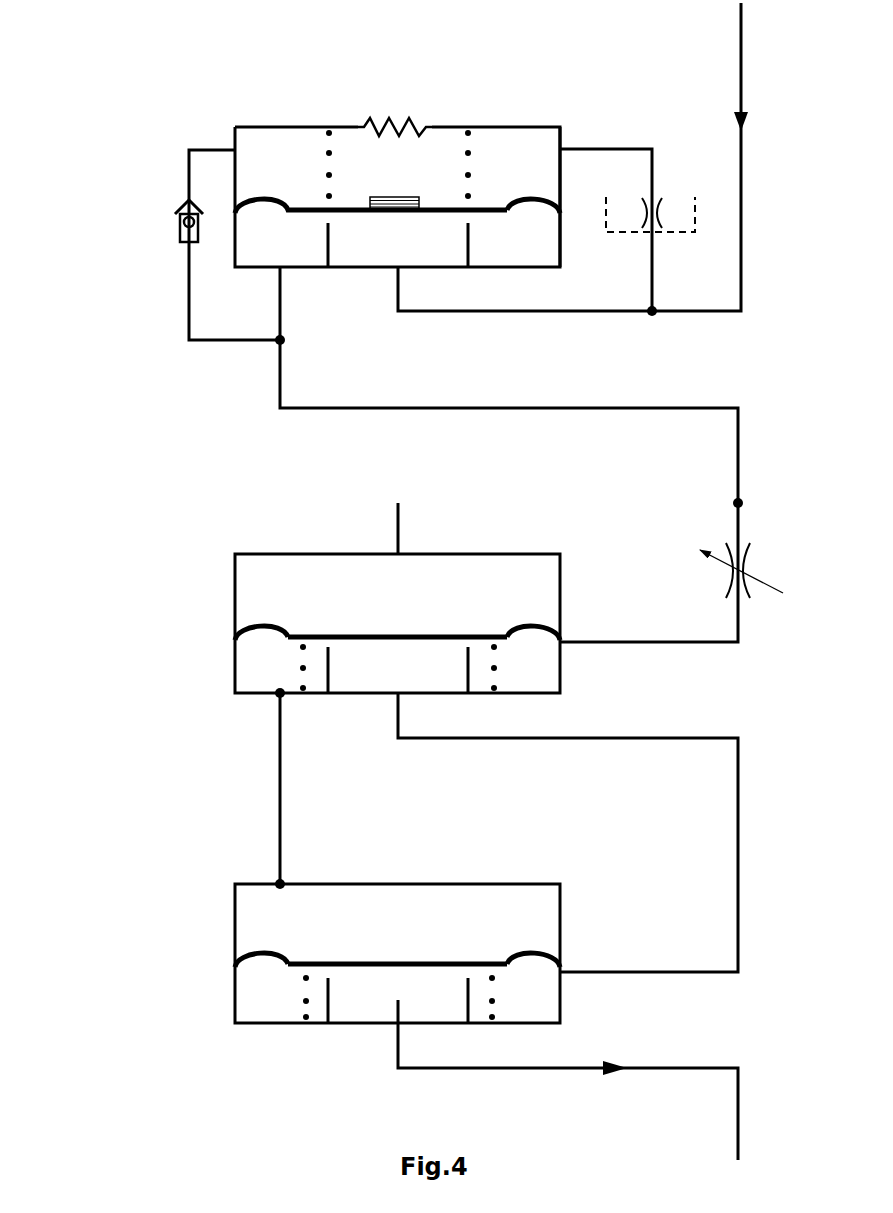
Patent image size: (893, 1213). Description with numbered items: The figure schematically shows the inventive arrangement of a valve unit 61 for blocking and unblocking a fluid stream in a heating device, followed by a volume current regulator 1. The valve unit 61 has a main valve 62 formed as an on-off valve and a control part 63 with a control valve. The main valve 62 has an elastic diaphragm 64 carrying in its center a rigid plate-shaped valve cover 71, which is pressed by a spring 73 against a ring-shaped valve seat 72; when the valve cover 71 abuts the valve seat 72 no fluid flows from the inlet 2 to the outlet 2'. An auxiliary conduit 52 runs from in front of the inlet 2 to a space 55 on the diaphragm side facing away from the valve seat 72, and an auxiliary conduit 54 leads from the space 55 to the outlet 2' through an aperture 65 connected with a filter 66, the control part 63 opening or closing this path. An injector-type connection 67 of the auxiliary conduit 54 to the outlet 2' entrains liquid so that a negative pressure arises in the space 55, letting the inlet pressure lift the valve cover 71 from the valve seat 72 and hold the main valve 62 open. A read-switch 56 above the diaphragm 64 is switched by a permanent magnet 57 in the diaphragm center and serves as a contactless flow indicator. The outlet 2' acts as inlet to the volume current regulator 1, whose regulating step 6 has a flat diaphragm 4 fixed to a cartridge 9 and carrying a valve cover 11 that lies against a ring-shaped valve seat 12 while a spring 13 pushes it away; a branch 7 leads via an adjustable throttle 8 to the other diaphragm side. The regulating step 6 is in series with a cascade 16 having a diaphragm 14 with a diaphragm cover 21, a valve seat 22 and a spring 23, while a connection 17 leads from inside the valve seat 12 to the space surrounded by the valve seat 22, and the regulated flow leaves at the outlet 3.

The volume current regulator 1 is at (181, 549).
The inlet 2 is at (596, 159).
The outlet 2' is at (533, 387).
The outlet 3 is at (743, 1137).
The diaphragm 4 is at (547, 621).
The regulating step 6 is at (253, 607).
The branch 7 is at (741, 530).
The adjustable throttle 8 is at (746, 574).
The cartridge 9 is at (241, 662).
The valve cover 11 is at (390, 640).
The valve seat 12 is at (331, 656).
The spring 13 is at (500, 667).
The diaphragm 14 is at (541, 946).
The cascade 16 is at (273, 930).
The connection 17 is at (742, 783).
The diaphragm cover 21 is at (454, 961).
The valve seat 22 is at (334, 1001).
The spring 23 is at (305, 1003).
The auxiliary conduit 52 is at (651, 266).
The auxiliary conduit 54 is at (188, 316).
The space 55 is at (443, 148).
The read-switch 56 is at (397, 121).
The permanent magnet 57 is at (407, 196).
The valve unit 61 is at (196, 123).
The main valve 62 is at (310, 170).
The control part 63 is at (177, 230).
The diaphragm 64 is at (540, 190).
The aperture 65 is at (658, 211).
The filter 66 is at (681, 236).
The injector-type connection 67 is at (285, 341).
The valve cover 71 is at (562, 145).
The valve seat 72 is at (470, 244).
The spring 73 is at (471, 156).